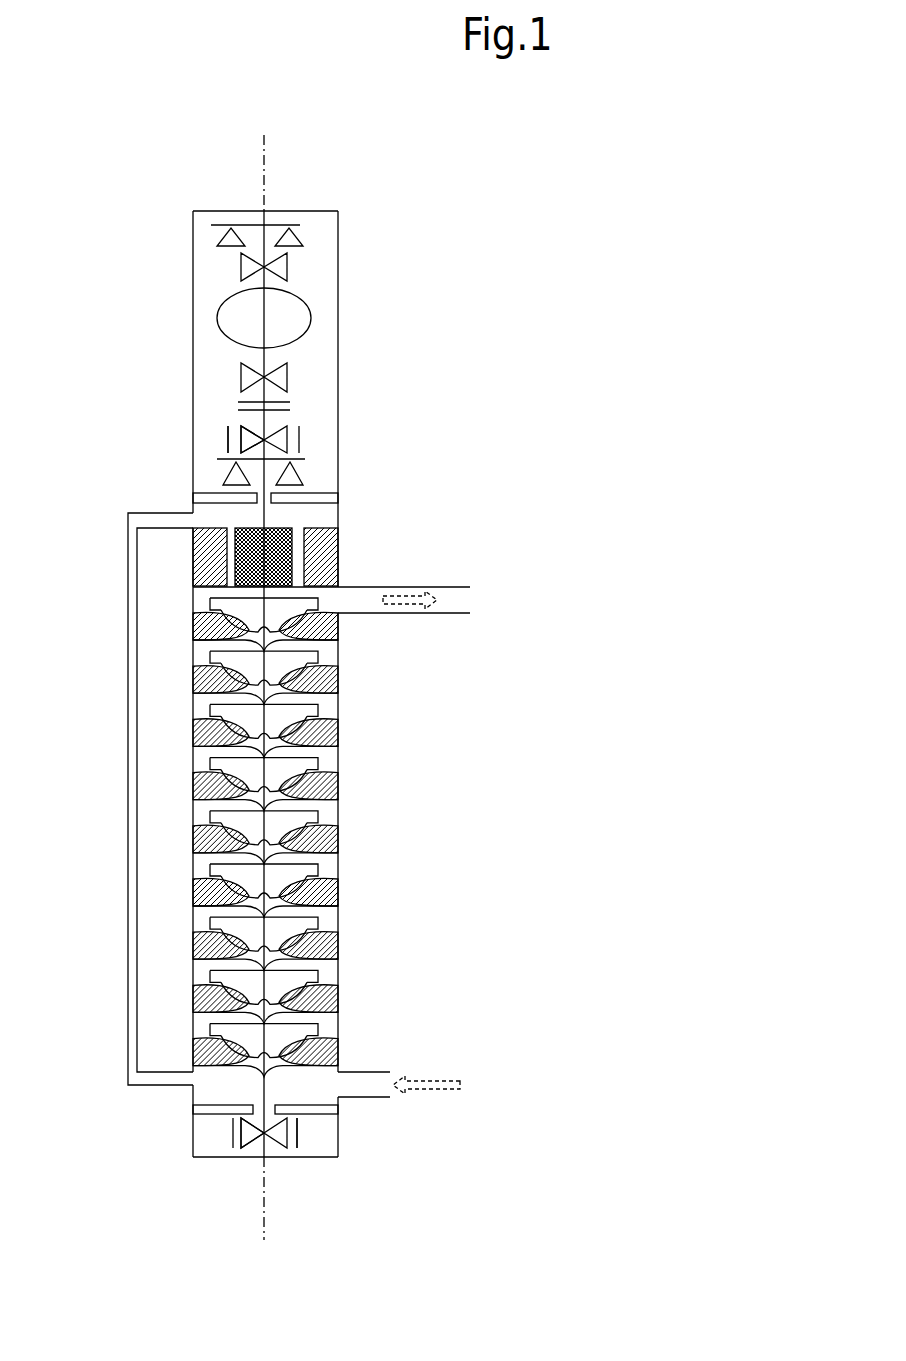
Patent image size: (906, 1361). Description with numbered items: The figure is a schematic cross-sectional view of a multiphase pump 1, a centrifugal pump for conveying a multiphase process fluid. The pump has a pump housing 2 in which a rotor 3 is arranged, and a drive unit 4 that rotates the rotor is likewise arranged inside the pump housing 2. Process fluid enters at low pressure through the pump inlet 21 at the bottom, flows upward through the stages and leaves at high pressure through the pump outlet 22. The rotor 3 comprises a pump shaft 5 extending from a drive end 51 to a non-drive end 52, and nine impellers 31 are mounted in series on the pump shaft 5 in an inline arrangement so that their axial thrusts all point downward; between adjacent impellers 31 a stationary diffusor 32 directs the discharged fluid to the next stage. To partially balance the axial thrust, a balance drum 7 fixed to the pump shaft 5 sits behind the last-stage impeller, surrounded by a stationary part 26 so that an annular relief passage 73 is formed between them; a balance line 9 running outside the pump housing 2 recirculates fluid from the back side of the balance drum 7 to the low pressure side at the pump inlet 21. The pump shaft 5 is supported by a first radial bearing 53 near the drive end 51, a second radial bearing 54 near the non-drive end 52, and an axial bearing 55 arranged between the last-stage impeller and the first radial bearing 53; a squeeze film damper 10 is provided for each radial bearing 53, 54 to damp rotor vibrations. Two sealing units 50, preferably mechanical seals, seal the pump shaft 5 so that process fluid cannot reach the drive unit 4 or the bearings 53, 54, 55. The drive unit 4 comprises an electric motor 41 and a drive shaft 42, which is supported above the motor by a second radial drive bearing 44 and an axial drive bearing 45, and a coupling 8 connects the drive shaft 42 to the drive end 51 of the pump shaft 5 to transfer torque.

The multiphase pump 1 is at (441, 161).
The pump housing 2 is at (344, 431).
The rotor 3 is at (282, 698).
The drive unit 4 is at (259, 276).
The pump shaft 5 is at (320, 837).
The balance drum 7 is at (276, 530).
The coupling 8 is at (238, 405).
The balance line 9 is at (126, 776).
The squeeze film damper 10 is at (223, 436).
The pump inlet 21 is at (367, 1098).
The pump outlet 22 is at (392, 587).
The stationary part 26 is at (340, 545).
The impeller 31 is at (320, 837).
The diffusor 32 is at (340, 733).
The electric motor 41 is at (307, 315).
The drive shaft 42 is at (245, 372).
The second radial drive bearing 44 is at (244, 272).
The axial drive bearing 45 is at (228, 228).
The sealing unit 50 is at (193, 500).
The drive end 51 is at (267, 422).
The non-drive end 52 is at (258, 1145).
The first radial bearing 53 is at (243, 440).
The second radial bearing 54 is at (300, 1137).
The axial bearing 55 is at (215, 472).
The relief passage 73 is at (208, 557).